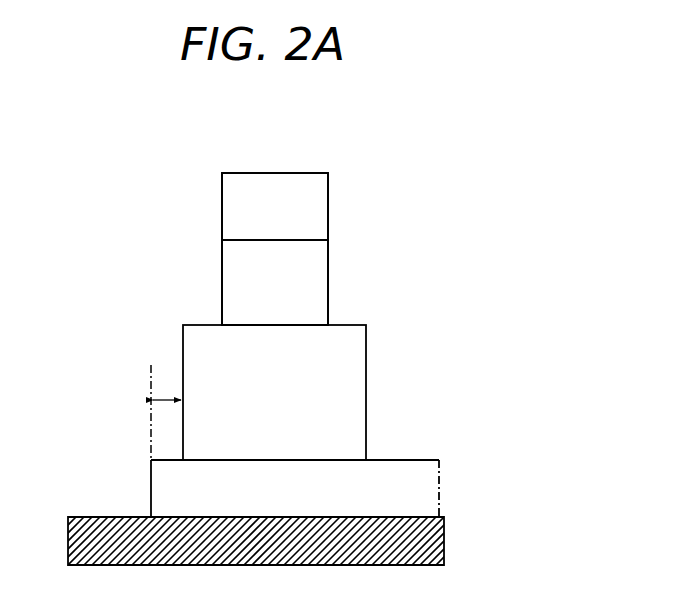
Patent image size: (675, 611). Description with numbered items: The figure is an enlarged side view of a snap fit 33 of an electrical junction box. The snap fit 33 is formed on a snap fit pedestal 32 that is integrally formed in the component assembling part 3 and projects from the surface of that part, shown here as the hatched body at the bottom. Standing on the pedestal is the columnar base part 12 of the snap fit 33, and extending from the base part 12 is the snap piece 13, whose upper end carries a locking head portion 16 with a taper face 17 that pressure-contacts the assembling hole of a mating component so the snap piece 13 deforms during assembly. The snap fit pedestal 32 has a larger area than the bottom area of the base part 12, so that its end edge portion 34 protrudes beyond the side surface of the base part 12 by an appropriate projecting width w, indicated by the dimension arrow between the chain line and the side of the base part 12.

The component assembling part 3 is at (425, 517).
The base part 12 is at (366, 358).
The snap piece 13 is at (337, 265).
The locking head portion 16 is at (290, 173).
The taper face 17 is at (303, 218).
The snap fit pedestal 32 is at (418, 461).
The snap fit 33 is at (185, 196).
The end edge portion 34 is at (168, 460).